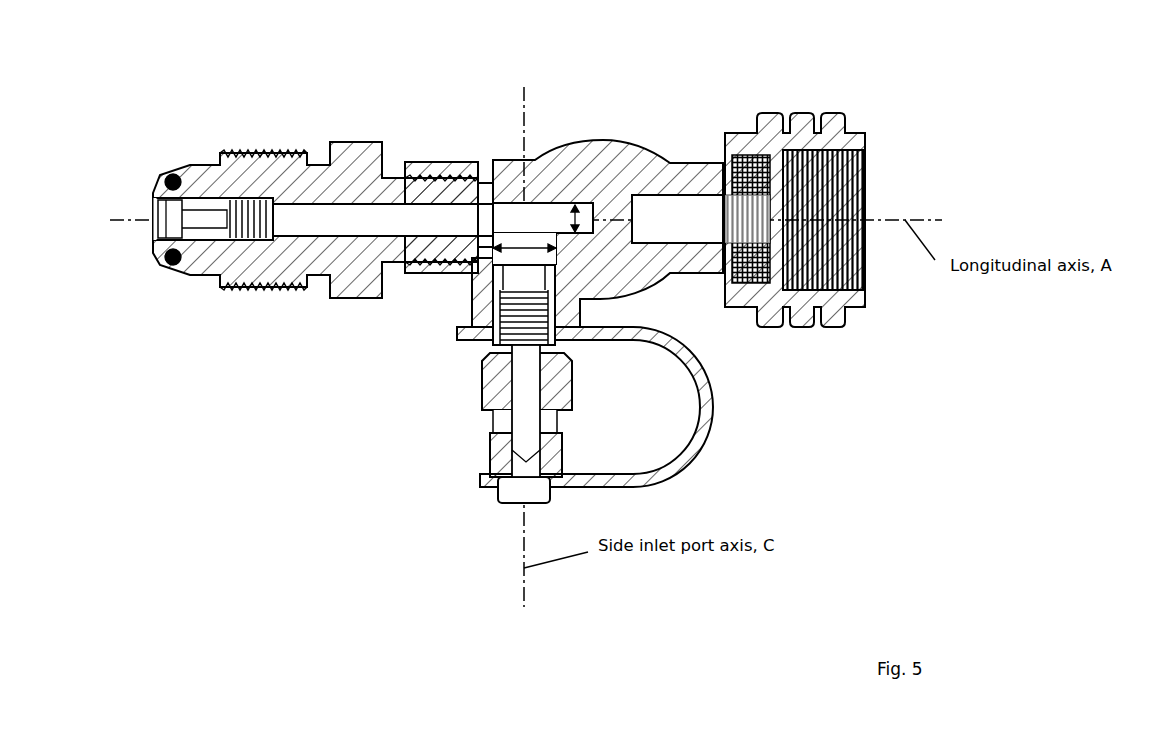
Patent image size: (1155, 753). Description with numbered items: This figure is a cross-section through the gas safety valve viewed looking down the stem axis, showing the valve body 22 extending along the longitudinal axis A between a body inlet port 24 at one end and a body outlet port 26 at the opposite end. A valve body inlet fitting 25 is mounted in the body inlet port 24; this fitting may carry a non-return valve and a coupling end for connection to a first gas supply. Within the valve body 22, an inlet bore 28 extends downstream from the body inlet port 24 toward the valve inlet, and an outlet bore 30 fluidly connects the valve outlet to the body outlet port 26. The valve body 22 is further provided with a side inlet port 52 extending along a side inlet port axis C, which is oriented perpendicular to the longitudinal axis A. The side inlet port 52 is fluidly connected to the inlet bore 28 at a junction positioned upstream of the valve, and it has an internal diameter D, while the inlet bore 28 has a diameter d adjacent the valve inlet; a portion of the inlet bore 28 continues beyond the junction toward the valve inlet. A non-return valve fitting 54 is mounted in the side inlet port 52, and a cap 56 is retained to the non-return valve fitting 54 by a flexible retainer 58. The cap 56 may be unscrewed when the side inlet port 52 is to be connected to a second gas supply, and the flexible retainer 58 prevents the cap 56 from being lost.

The valve body 22 is at (443, 160).
The body inlet port 24 is at (481, 200).
The valve body inlet fitting 25 is at (350, 156).
The body outlet port 26 is at (800, 150).
The inlet bore 28 is at (508, 217).
The outlet bore 30 is at (662, 200).
The side inlet port 52 is at (492, 263).
The non-return valve fitting 54 is at (490, 353).
The cap 56 is at (488, 460).
The flexible retainer 58 is at (710, 410).